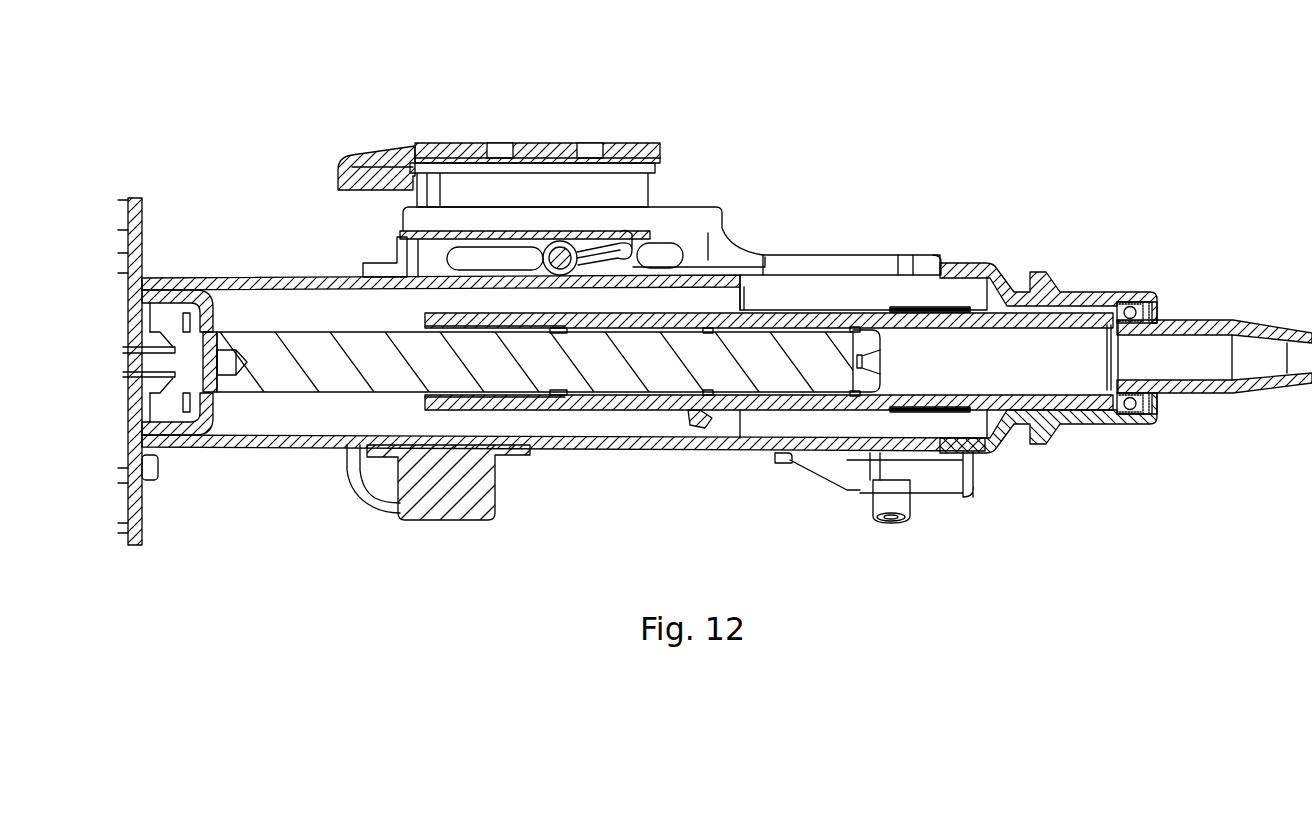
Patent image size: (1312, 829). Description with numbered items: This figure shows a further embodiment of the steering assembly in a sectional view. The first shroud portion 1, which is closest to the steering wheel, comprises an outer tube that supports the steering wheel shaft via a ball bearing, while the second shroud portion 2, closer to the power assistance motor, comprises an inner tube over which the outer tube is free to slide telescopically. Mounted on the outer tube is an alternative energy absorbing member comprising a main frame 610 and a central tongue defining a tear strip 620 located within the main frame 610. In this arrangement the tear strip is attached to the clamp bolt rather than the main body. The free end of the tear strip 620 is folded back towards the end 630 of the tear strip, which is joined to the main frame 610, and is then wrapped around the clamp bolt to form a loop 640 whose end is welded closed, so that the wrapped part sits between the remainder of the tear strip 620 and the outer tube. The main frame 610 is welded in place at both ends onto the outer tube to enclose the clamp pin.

The first shroud portion 1 is at (876, 262).
The second shroud portion 2 is at (248, 278).
The main frame 610 is at (437, 226).
The tear strip 620 is at (643, 230).
The end of the tear strip 630 is at (497, 229).
The loop 640 is at (566, 242).